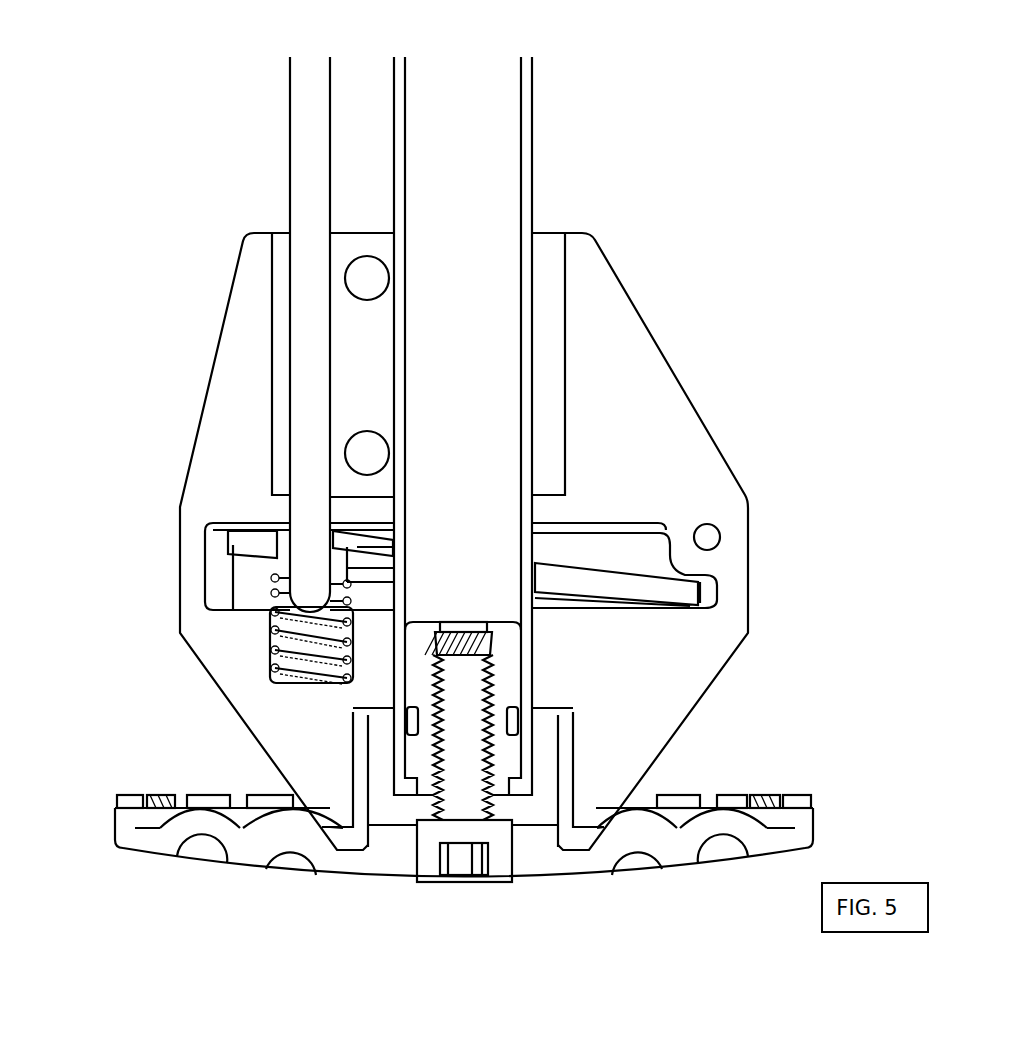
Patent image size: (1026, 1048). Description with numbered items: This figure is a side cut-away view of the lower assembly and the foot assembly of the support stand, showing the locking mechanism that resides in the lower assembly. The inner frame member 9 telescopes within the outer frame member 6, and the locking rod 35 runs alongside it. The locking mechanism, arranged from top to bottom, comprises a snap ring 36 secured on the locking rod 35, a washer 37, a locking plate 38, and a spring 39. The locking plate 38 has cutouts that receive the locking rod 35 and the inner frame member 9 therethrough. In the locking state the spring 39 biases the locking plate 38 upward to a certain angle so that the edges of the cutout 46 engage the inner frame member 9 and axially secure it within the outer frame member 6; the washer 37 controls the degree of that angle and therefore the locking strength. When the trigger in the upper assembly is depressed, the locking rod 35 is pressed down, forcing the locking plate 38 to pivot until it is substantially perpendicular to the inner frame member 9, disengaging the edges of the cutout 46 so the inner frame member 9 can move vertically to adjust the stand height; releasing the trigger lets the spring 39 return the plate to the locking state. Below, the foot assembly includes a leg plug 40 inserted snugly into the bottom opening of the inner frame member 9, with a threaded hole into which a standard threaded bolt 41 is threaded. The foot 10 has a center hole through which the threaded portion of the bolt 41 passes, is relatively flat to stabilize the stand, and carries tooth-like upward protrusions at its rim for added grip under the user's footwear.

The locking rod 35 is at (290, 77).
The inner frame member 9 is at (493, 137).
The outer frame member 6 is at (532, 190).
The cutout 46 is at (538, 557).
The snap ring 36 is at (282, 523).
The washer 37 is at (268, 528).
The locking plate 38 is at (237, 540).
The spring 39 is at (267, 637).
The leg plug 40 is at (420, 680).
The threaded bolt 41 is at (457, 752).
The foot 10 is at (128, 825).